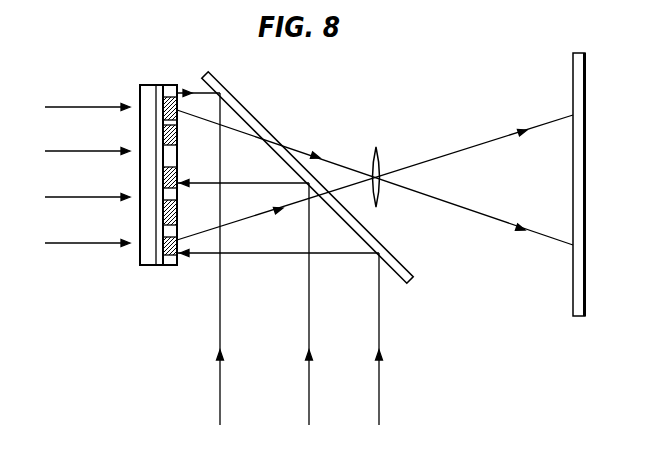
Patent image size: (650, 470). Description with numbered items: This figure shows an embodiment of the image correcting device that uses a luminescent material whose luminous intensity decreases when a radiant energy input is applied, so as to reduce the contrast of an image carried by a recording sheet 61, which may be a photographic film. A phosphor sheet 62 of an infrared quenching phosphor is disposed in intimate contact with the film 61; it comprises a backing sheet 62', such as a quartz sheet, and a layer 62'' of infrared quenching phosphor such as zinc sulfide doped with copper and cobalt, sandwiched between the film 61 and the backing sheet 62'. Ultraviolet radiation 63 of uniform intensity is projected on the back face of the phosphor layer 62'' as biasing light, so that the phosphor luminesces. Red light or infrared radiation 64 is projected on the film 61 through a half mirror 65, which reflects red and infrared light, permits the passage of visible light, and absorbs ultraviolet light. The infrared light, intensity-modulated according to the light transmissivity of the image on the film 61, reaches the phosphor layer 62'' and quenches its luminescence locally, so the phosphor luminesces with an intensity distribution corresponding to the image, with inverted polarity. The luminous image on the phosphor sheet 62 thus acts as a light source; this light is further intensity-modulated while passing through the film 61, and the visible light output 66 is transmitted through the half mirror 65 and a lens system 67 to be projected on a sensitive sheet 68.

The recording sheet 61 is at (177, 265).
The phosphor sheet 62 is at (149, 174).
The backing sheet 62' is at (128, 163).
The infrared quenching phosphor layer 62'' is at (164, 155).
The ultraviolet radiation 63 is at (70, 245).
The red light or infrared radiation 64 is at (221, 393).
The half mirror 65 is at (411, 282).
The visible light output 66 is at (241, 220).
The lens system 67 is at (381, 172).
The sensitive sheet 68 is at (573, 75).